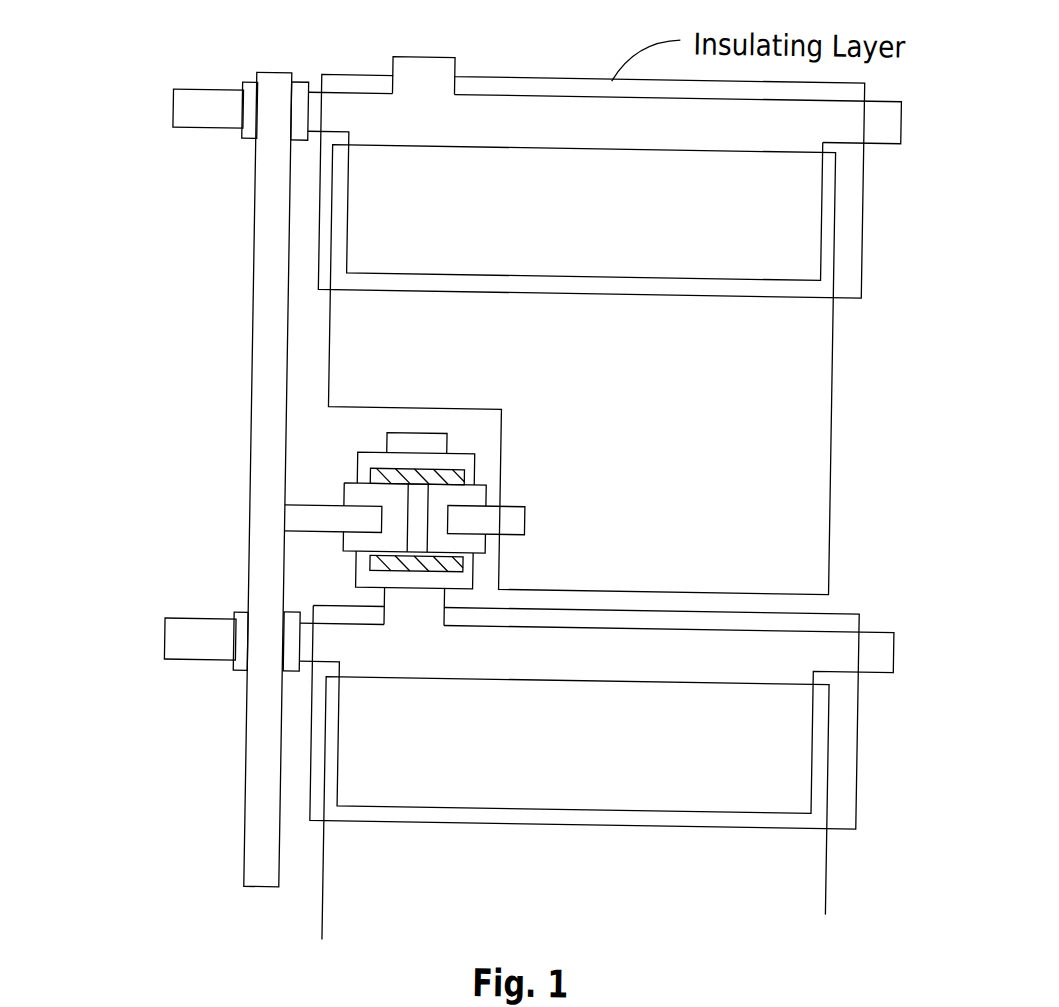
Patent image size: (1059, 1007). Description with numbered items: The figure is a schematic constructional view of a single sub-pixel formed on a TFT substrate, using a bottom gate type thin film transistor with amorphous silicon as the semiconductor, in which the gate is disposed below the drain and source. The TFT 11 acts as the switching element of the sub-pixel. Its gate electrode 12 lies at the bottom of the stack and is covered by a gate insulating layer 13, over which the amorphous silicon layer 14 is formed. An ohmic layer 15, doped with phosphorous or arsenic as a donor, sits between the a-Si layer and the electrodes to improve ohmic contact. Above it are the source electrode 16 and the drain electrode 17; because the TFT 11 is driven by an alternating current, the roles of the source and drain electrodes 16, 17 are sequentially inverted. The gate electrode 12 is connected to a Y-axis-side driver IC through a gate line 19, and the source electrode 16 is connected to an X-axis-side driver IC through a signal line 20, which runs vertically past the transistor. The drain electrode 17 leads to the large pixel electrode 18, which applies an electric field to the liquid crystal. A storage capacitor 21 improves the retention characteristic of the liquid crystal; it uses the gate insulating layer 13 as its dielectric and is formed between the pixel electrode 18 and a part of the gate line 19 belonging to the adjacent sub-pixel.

The TFT 11 is at (321, 460).
The gate electrode 12 is at (416, 444).
The gate insulating layer 13 is at (468, 582).
The amorphous silicon layer 14 is at (411, 574).
The ohmic layer 15 is at (389, 497).
The source electrode 16 is at (323, 523).
The drain electrode 17 is at (512, 521).
The pixel electrode 18 is at (576, 350).
The gate line 19 is at (180, 648).
The signal line 20 is at (248, 813).
The storage capacitor 21 is at (584, 226).